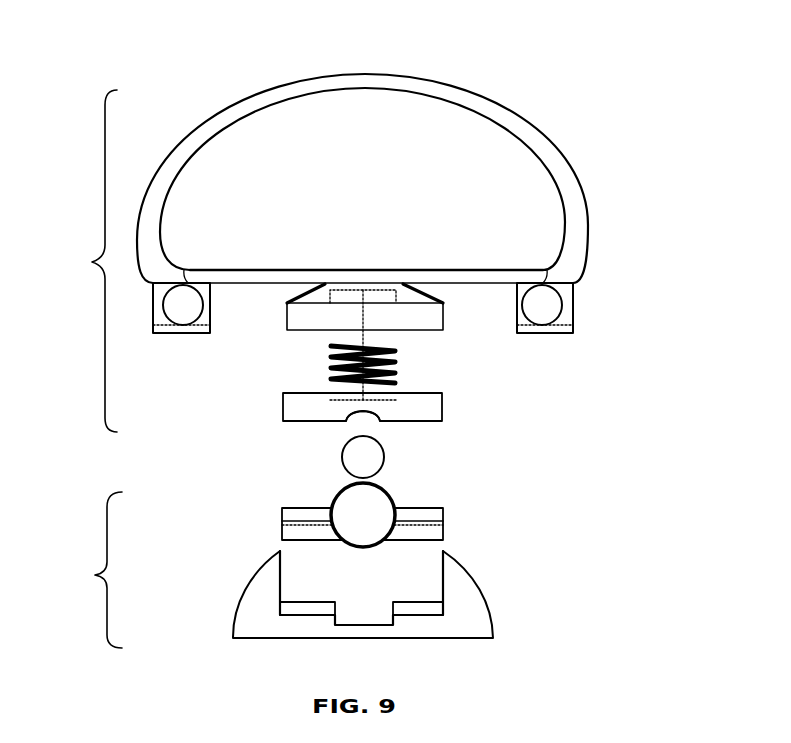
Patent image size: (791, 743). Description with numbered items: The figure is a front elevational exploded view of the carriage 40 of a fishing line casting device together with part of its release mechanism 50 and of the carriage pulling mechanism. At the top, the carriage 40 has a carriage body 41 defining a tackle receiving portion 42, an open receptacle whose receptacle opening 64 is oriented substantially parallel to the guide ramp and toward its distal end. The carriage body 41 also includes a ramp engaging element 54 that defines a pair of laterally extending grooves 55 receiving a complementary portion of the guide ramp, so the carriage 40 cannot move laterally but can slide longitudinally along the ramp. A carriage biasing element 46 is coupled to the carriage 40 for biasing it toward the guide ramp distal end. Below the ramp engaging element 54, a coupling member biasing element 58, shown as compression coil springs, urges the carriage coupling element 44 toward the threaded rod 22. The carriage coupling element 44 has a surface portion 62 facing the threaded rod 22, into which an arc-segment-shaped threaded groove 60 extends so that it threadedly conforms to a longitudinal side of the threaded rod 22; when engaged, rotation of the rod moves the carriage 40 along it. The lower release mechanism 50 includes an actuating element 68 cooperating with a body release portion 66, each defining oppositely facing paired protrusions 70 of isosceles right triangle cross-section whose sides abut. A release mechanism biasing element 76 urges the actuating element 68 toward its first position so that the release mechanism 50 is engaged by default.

The carriage 40 is at (83, 261).
The carriage body 41 is at (549, 120).
The tackle receiving portion 42 is at (217, 117).
The receptacle opening 64 is at (465, 103).
The ramp engaging element 54 is at (378, 302).
The laterally extending grooves 55 is at (312, 294).
The carriage biasing element 46 is at (188, 318).
The coupling member biasing element 58 is at (393, 368).
The surface portion 62 is at (290, 420).
The threaded groove 60 is at (349, 420).
The carriage coupling element 44 is at (452, 427).
The threaded rod 22 is at (373, 462).
The actuating element 68 is at (282, 510).
The paired protrusions 70 is at (290, 529).
The release mechanism biasing element 76 is at (443, 540).
The release mechanism 50 is at (88, 570).
The body release portion 66 is at (470, 650).